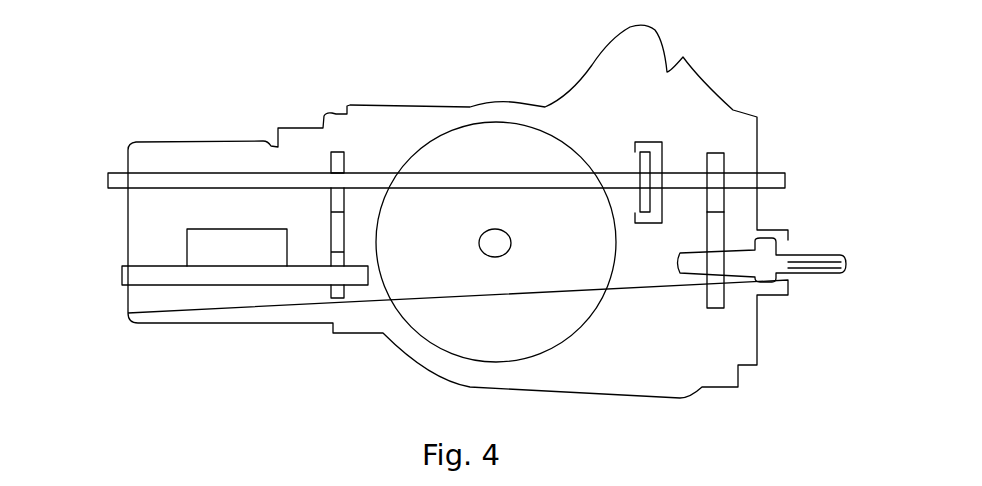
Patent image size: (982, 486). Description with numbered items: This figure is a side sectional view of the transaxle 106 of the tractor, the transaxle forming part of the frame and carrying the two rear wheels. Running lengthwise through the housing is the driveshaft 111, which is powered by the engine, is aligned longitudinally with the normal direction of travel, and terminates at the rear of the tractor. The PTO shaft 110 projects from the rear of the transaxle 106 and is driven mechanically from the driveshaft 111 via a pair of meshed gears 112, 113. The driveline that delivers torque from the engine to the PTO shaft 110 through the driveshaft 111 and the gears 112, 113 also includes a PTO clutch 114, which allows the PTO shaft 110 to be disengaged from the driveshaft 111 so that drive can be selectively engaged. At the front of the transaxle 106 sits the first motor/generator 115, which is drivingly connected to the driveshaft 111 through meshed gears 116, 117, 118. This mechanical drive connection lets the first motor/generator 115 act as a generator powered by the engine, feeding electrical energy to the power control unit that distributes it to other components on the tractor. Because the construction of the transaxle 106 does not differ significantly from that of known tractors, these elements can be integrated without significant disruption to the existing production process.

The transaxle 106 is at (413, 107).
The PTO shaft 110 is at (832, 258).
The driveshaft 111 is at (218, 182).
The meshed gear 112 is at (717, 163).
The meshed gear 113 is at (718, 285).
The PTO clutch 114 is at (662, 135).
The first motor/generator 115 is at (235, 252).
The meshed gear 116 is at (340, 160).
The meshed gear 117 is at (337, 232).
The meshed gear 118 is at (338, 293).